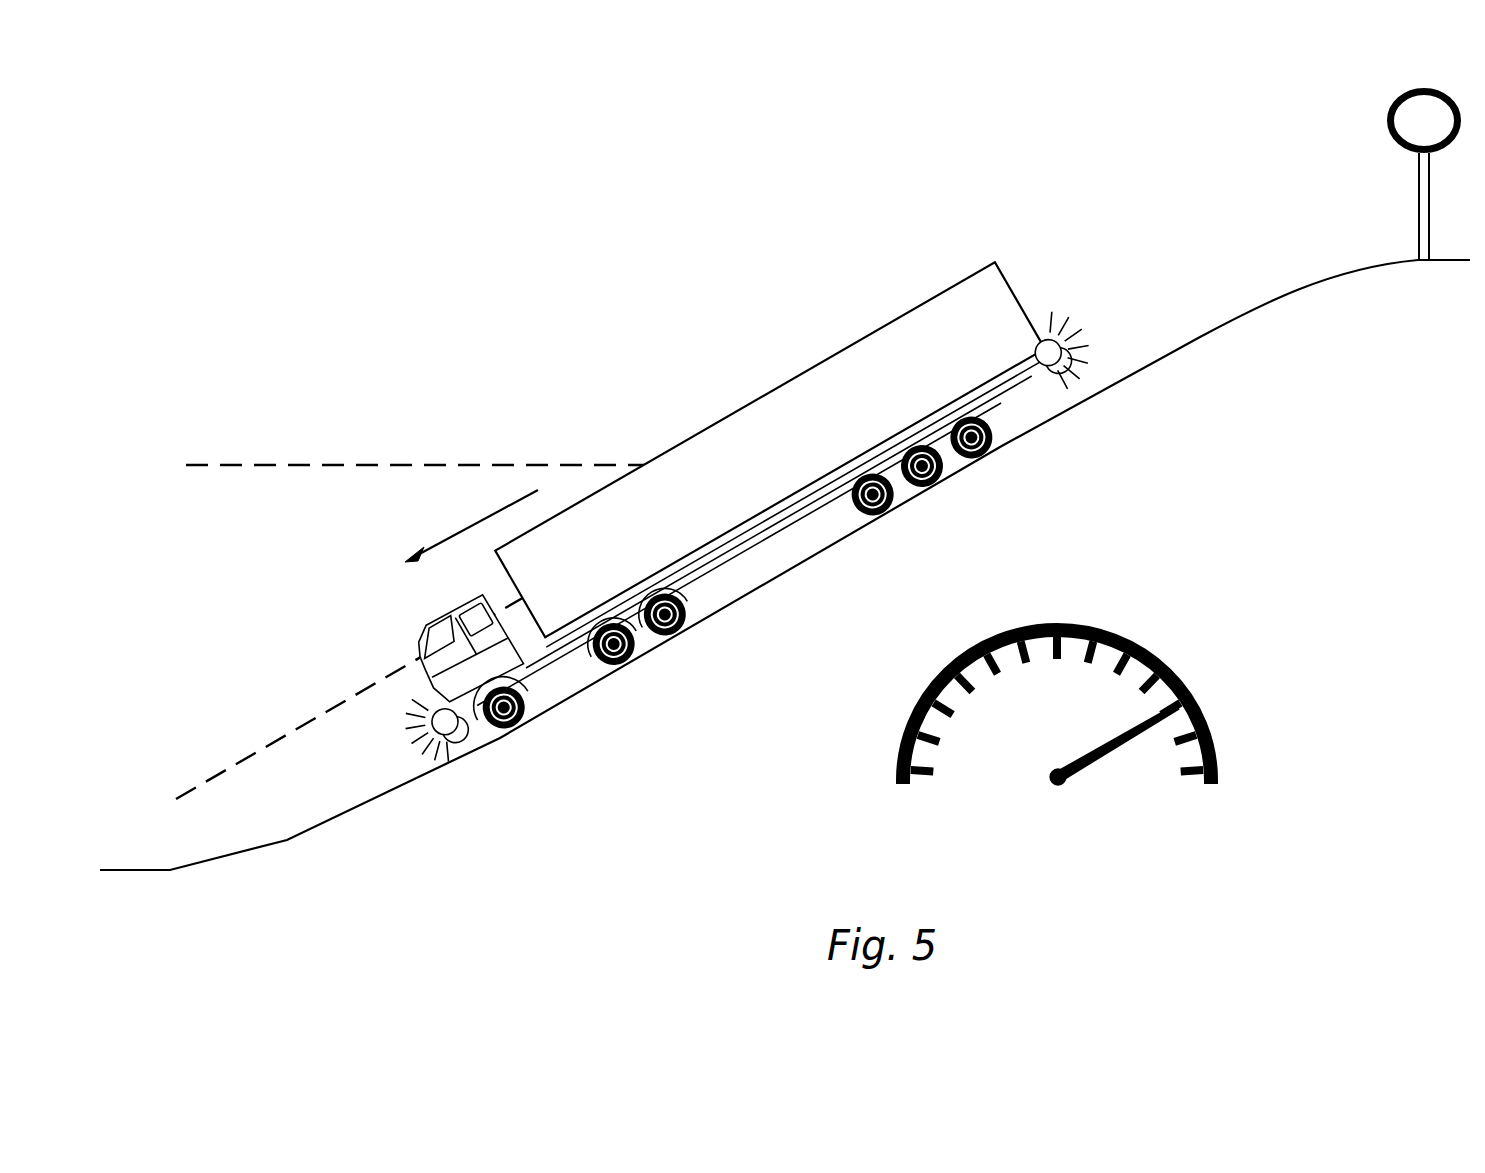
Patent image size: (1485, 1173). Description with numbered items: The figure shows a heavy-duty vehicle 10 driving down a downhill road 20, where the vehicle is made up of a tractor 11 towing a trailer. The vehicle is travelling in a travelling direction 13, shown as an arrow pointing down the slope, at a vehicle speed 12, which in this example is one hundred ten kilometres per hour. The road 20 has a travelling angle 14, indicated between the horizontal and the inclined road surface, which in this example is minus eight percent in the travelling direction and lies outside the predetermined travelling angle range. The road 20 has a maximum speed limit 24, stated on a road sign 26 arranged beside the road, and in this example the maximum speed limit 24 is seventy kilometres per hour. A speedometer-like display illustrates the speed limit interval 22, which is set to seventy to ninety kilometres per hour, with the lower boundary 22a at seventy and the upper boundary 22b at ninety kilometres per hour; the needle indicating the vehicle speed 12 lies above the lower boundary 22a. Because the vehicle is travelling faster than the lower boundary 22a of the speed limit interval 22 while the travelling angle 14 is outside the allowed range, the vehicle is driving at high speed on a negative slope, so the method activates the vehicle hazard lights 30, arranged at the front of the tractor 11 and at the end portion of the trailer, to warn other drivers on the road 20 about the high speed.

The vehicle 10 is at (818, 566).
The tractor 11 is at (877, 357).
The vehicle speed 12 is at (1070, 765).
The travelling direction 13 is at (467, 528).
The travelling angle 14 is at (622, 475).
The road 20 is at (1233, 311).
The speed limit interval 22 is at (1081, 646).
The lower boundary 22a is at (1053, 622).
The upper boundary 22b is at (1138, 644).
The maximum speed limit 24 is at (1387, 113).
The road sign 26 is at (1387, 128).
The vehicle hazard lights 30 is at (1070, 325).